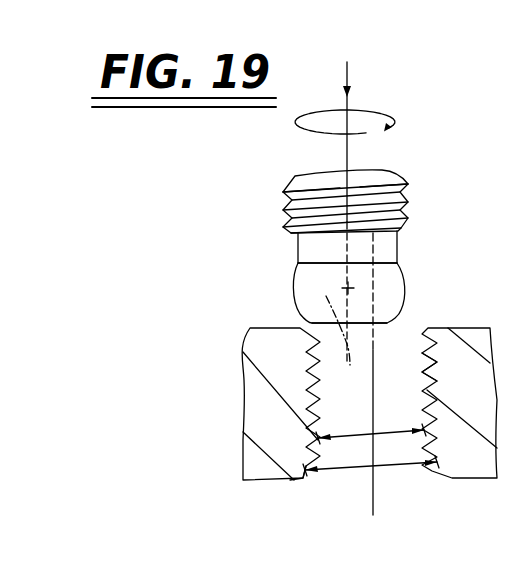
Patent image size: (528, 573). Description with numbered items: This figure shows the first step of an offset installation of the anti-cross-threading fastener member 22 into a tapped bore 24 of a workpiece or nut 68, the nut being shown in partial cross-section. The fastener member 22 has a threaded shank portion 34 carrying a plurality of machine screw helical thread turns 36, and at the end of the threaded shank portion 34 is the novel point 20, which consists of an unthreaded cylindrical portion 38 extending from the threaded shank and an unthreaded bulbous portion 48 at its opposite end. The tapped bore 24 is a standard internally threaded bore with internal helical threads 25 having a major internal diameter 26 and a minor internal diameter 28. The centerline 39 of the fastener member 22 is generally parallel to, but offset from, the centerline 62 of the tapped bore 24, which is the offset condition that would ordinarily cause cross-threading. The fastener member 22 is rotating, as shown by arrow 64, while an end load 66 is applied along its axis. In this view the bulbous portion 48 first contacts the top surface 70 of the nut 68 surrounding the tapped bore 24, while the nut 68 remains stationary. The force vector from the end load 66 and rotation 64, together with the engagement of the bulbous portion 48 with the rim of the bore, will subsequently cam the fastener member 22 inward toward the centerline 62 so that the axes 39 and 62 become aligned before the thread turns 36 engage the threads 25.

The point 20 is at (292, 284).
The fastener member 22 is at (420, 212).
The tapped bore 24 is at (310, 484).
The internal helical threads 25 is at (425, 367).
The major internal diameter 26 is at (382, 458).
The minor internal diameter 28 is at (340, 438).
The threaded shank portion 34 is at (286, 190).
The machine screw helical thread turns 36 is at (405, 183).
The unthreaded cylindrical portion 38 is at (313, 246).
The centerline of the fastener member 39 is at (326, 317).
The unthreaded bulbous portion 48 is at (312, 302).
The centerline of the tapped bore 62 is at (372, 303).
The rotation arrow 64 is at (383, 114).
The end load 66 is at (347, 77).
The nut 68 is at (252, 370).
The top surface 70 is at (450, 328).